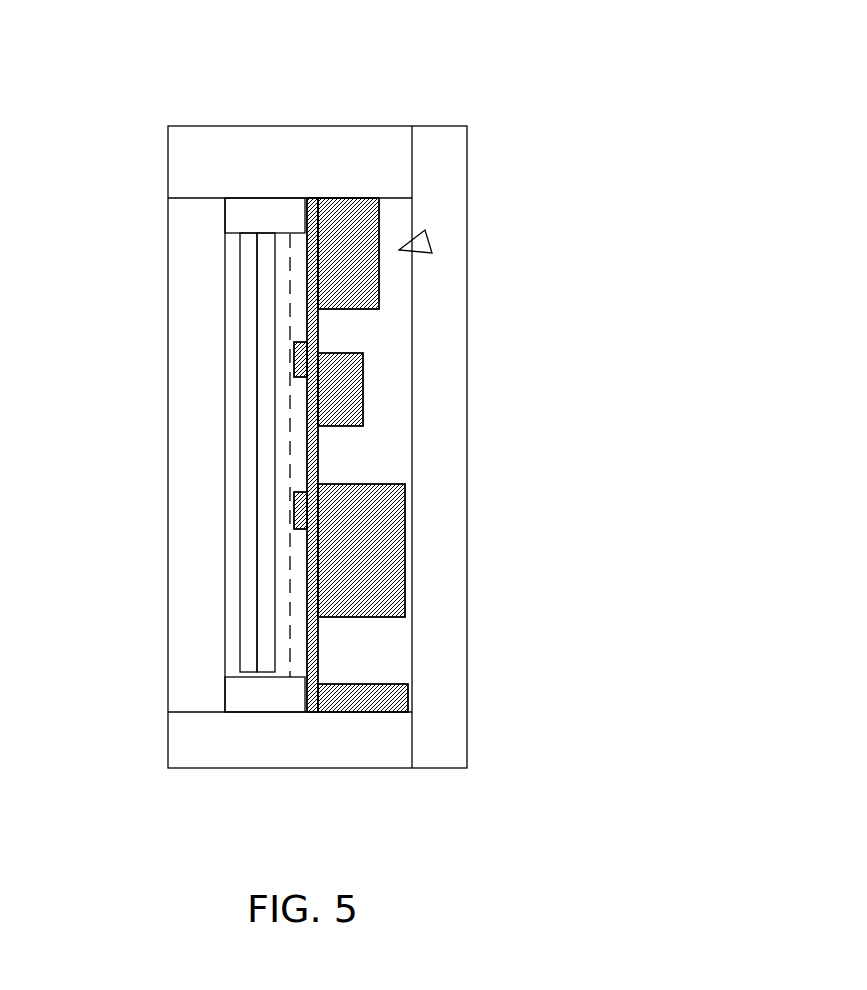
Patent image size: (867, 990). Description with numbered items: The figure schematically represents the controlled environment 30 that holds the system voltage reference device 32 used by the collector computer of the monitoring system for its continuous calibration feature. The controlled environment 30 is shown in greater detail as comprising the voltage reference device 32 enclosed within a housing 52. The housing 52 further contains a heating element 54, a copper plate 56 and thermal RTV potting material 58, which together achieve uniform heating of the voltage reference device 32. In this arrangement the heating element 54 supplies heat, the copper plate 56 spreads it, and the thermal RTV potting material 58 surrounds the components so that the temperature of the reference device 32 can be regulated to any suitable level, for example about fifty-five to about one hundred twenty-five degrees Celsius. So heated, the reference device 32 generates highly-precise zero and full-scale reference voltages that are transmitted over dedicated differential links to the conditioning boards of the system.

The controlled environment 30 is at (389, 64).
The voltage reference device 32 is at (430, 242).
The housing 52 is at (238, 152).
The heating element 54 is at (238, 290).
The copper plate 56 is at (267, 438).
The thermal RTV potting material 58 is at (347, 662).